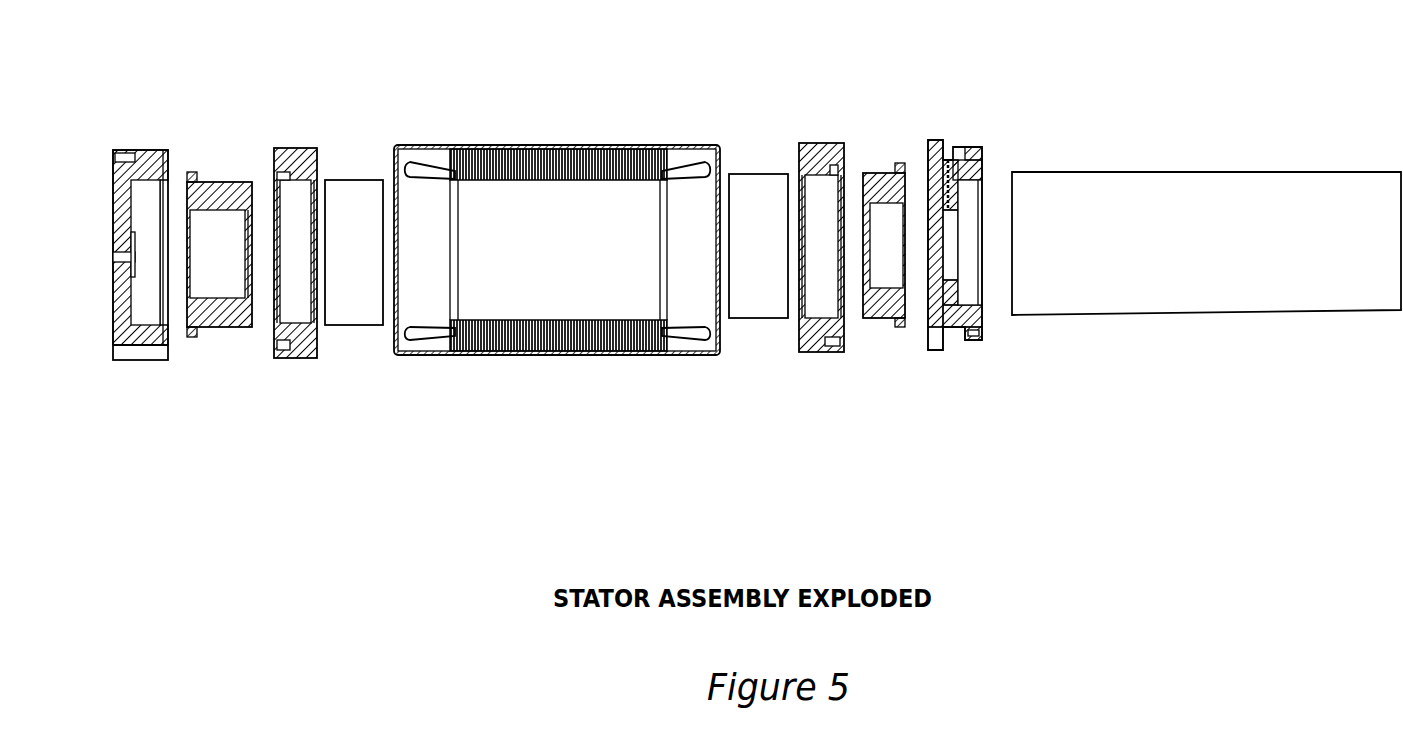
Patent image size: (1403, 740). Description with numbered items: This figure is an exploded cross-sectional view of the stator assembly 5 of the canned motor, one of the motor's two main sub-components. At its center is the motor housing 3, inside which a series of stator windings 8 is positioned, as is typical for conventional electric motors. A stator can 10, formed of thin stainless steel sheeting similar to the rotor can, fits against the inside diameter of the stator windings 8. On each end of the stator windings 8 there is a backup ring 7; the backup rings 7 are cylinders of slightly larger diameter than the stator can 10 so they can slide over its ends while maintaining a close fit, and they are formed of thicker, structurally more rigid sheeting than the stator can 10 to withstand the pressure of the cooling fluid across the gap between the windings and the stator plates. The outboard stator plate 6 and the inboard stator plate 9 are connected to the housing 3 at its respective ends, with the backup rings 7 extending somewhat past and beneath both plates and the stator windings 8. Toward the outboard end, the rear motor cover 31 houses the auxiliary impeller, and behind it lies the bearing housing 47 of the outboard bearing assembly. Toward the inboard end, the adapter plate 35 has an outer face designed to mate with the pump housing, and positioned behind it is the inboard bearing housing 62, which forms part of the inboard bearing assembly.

The housing 3 is at (462, 147).
The stator assembly 5 is at (557, 192).
The outboard stator plate 6 is at (293, 148).
The backup rings 7 is at (348, 181).
The stator windings 8 is at (526, 184).
The inboard stator plate 9 is at (820, 143).
The stator can 10 is at (1152, 172).
The rear motor cover 31 is at (145, 148).
The adapter plate 35 is at (975, 146).
The bearing housing 47 is at (215, 181).
The inboard bearing housing 62 is at (872, 173).